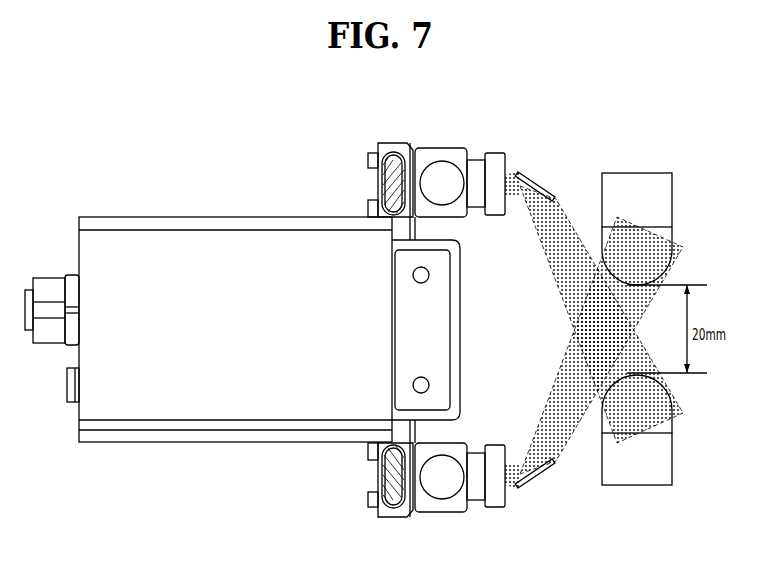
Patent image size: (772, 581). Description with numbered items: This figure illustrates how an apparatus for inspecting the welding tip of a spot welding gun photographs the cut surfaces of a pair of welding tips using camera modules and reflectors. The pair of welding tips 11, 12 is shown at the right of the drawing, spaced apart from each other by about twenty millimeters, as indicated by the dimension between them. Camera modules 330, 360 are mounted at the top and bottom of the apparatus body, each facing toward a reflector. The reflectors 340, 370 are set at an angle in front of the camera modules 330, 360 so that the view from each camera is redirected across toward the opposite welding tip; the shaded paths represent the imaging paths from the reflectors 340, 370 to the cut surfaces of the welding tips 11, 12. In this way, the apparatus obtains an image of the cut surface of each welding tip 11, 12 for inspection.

The welding tip 11 is at (672, 187).
The welding tip 12 is at (672, 466).
The camera module 330 is at (430, 148).
The reflector 340 is at (540, 176).
The camera module 360 is at (430, 512).
The reflector 370 is at (540, 484).